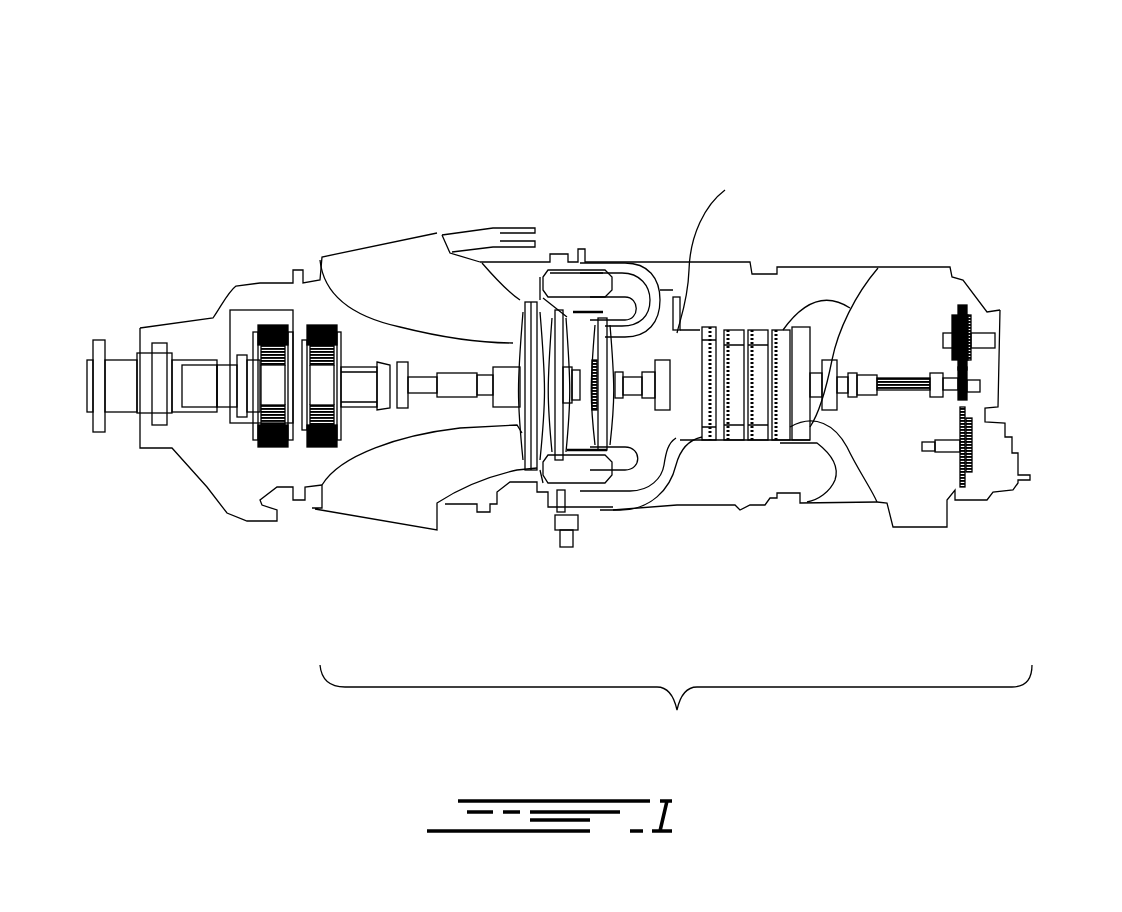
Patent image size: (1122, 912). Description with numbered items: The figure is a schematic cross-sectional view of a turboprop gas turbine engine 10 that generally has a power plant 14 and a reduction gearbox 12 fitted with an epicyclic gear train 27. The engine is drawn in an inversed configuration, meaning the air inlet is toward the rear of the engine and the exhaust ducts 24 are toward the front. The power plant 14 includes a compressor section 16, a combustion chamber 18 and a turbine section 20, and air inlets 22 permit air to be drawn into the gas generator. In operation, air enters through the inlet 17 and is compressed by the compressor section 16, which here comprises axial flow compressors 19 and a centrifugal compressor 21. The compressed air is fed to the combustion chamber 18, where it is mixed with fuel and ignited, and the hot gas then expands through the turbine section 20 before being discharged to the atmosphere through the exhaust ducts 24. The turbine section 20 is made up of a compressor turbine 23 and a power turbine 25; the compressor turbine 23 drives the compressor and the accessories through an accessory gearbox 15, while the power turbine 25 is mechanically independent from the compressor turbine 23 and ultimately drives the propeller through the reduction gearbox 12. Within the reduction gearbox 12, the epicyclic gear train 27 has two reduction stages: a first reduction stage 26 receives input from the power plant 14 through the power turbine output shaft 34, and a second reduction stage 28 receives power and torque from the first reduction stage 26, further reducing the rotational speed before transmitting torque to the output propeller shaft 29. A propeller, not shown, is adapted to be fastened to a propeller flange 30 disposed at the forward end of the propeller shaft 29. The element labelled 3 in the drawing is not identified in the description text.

The turboprop gas turbine engine 10 is at (997, 251).
The reduction gearbox 12 is at (218, 497).
The power plant 14 is at (676, 705).
The accessory gearbox 15 is at (992, 480).
The compressor section 16 is at (727, 333).
The inlet 17 is at (852, 483).
The combustion chamber 18 is at (660, 290).
The axial flow compressors 19 is at (773, 332).
The turbine section 20 is at (583, 341).
The centrifugal compressor 21 is at (722, 293).
The air inlets 22 is at (853, 297).
The compressor turbine 23 is at (628, 295).
The exhaust ducts 24 is at (383, 488).
The power turbine 25 is at (557, 318).
The first reduction stage 26 is at (312, 326).
The epicyclic gear train 27 is at (285, 300).
The second reduction stage 28 is at (267, 326).
The propeller shaft 29 is at (132, 350).
The propeller flange 30 is at (75, 350).
The output shaft 3 is at (227, 333).
The power turbine output shaft 34 is at (425, 377).